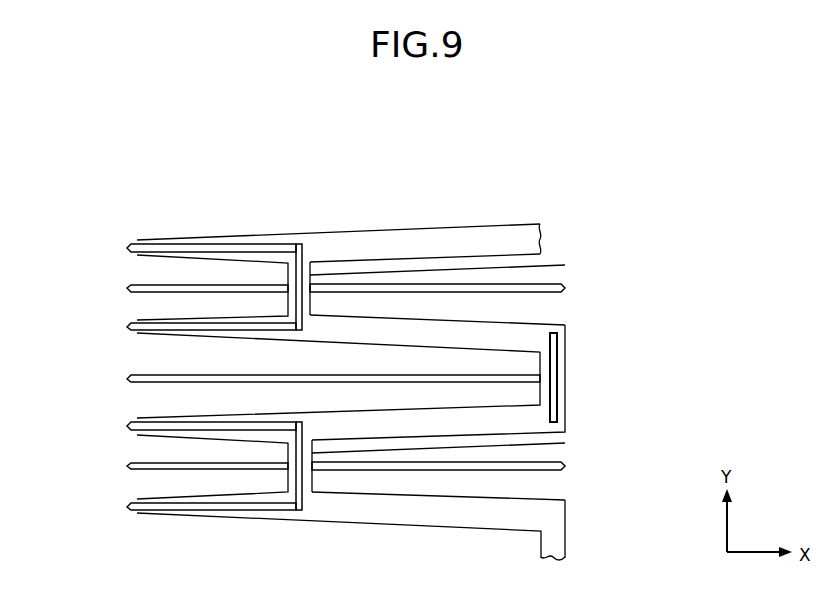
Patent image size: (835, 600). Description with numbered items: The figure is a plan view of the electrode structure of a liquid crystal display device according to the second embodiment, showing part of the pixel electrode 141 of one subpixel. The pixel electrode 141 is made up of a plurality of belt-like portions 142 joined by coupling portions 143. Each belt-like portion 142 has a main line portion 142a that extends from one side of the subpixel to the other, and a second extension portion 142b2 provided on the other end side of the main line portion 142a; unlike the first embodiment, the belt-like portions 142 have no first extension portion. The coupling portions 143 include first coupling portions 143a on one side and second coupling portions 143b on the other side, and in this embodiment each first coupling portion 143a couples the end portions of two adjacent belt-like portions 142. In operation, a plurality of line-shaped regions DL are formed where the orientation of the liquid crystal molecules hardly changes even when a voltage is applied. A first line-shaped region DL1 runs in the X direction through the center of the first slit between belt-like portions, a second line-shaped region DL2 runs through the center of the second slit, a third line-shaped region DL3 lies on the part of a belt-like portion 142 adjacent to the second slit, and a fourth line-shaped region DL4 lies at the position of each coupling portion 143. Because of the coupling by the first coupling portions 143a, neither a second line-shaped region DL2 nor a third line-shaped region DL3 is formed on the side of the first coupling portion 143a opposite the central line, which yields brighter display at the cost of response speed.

The pixel electrode 141 is at (617, 160).
The belt-like portion 142 is at (351, 370).
The main line portion 142a is at (487, 240).
The second extension portion 142b2 is at (202, 239).
The coupling portion 143 is at (501, 406).
The first coupling portion 143a is at (553, 328).
The second coupling portion 143b is at (565, 265).
The line-shaped region DL is at (349, 383).
The first line-shaped region DL1 is at (127, 379).
The second line-shaped region DL2 is at (127, 289).
The third line-shaped region DL3 is at (127, 250).
The fourth line-shaped region DL4 is at (303, 255).